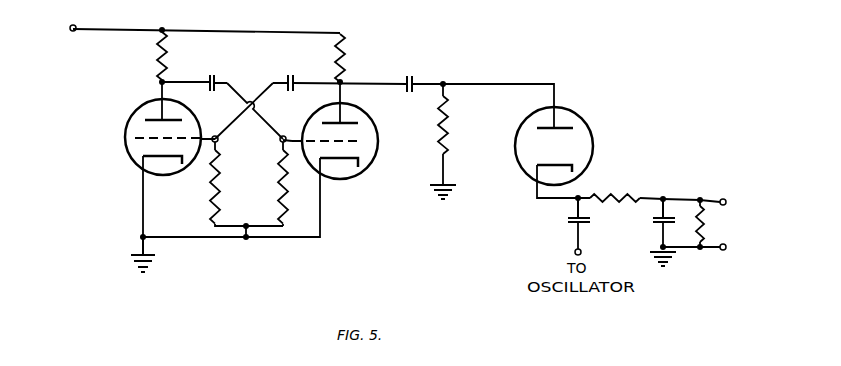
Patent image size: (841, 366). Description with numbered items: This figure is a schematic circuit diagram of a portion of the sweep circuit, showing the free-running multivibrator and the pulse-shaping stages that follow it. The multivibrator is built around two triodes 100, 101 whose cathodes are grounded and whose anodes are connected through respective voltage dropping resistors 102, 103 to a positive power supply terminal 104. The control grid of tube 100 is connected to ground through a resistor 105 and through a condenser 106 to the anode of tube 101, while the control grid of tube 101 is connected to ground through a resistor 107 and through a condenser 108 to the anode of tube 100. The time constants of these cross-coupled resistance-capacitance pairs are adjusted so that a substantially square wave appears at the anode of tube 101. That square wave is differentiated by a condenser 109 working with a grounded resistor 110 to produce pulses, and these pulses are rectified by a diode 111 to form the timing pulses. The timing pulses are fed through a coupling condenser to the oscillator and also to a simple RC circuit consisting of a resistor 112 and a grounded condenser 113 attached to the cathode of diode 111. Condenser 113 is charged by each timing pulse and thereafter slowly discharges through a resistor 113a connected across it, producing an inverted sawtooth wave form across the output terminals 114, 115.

The triode 100 is at (127, 124).
The triode 101 is at (359, 174).
The voltage dropping resistor 102 is at (158, 60).
The voltage dropping resistor 103 is at (347, 55).
The positive power supply terminal 104 is at (71, 32).
The resistor 105 is at (212, 200).
The condenser 106 is at (292, 73).
The resistor 107 is at (279, 187).
The condenser 108 is at (212, 73).
The condenser 109 is at (414, 80).
The grounded resistor 110 is at (447, 128).
The diode 111 is at (592, 137).
The resistor 112 is at (616, 196).
The grounded condenser 113 is at (656, 224).
The resistor 113a is at (706, 220).
The output terminal 114 is at (725, 198).
The output terminal 115 is at (726, 247).